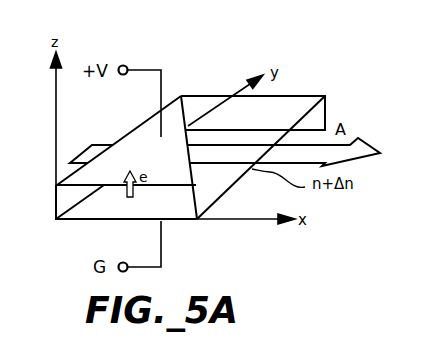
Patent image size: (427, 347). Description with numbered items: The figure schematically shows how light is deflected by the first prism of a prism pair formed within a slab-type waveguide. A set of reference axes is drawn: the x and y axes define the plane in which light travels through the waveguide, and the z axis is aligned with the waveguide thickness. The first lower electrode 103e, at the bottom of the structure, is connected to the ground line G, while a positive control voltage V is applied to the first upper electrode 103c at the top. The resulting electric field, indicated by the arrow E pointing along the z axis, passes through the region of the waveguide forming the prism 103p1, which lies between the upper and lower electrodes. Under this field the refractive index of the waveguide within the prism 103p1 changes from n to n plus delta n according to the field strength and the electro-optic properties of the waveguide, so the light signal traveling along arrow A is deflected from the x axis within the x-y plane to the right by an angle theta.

The first upper electrode 103c is at (142, 142).
The prism 103p1 is at (176, 113).
The first lower electrode 103e is at (78, 221).